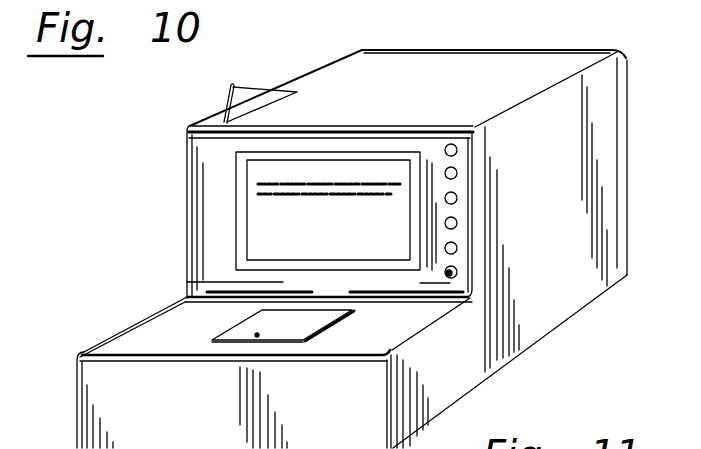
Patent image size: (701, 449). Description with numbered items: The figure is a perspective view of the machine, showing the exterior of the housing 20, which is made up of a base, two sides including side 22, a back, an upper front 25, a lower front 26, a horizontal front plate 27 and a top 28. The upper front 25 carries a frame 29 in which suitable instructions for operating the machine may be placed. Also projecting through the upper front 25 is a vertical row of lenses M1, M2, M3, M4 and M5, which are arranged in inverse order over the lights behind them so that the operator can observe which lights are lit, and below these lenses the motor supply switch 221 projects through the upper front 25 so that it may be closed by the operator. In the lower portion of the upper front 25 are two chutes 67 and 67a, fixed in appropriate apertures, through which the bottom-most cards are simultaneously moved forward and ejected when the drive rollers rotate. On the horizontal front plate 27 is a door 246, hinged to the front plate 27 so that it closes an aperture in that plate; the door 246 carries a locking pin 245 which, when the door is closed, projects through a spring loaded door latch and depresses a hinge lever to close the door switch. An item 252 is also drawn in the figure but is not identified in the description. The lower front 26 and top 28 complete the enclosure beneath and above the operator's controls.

The housing 20 is at (317, 70).
The side 22 is at (617, 172).
The upper front 25 is at (195, 190).
The lower front 26 is at (82, 417).
The horizontal front plate 27 is at (128, 330).
The top 28 is at (447, 58).
The frame 29 is at (237, 165).
The lens M1 is at (457, 248).
The lens M2 is at (457, 223).
The lens M3 is at (457, 198).
The lens M4 is at (457, 173).
The lens M5 is at (457, 150).
The motor supply switch 221 is at (457, 272).
The chute 67 is at (392, 294).
The chute 67a is at (283, 292).
The locking pin 245 is at (258, 335).
The door 246 is at (325, 318).
The stylus 252 is at (245, 93).